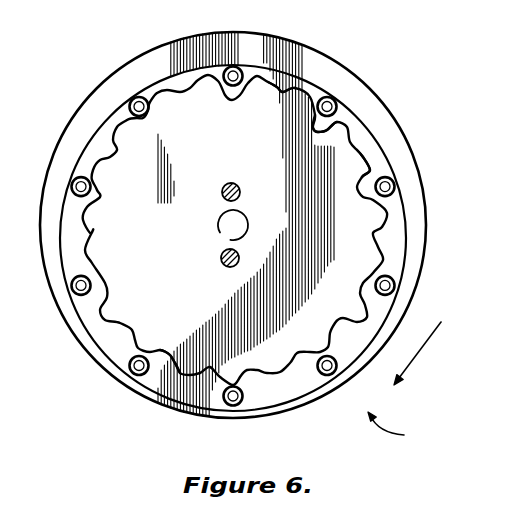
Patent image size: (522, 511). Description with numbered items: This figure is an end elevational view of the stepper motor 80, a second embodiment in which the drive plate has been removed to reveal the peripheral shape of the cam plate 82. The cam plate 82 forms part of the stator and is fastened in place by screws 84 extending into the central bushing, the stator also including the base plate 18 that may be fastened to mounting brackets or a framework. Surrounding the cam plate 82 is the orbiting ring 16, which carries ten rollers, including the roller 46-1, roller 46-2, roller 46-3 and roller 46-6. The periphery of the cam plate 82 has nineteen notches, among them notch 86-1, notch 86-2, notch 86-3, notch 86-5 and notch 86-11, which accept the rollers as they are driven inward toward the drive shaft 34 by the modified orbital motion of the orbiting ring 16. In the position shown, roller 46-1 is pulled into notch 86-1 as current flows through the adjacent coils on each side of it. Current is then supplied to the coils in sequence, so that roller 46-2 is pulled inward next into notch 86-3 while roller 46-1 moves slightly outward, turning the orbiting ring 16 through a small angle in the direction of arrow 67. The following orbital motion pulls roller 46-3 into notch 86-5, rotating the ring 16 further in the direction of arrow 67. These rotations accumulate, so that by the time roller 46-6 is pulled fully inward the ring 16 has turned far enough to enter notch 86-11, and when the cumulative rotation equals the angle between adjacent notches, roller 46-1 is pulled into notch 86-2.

The orbiting ring 16 is at (88, 138).
The base plate 18 is at (86, 95).
The drive shaft 34 is at (223, 237).
The roller 46-1 is at (238, 65).
The roller 46-2 is at (330, 98).
The roller 46-3 is at (395, 186).
The roller 46-6 is at (237, 405).
The arrow 67 is at (412, 364).
The stepper motor 80 is at (401, 429).
The cam plate 82 is at (171, 238).
The screw 84 is at (224, 186).
The notch 86-1 is at (197, 80).
The notch 86-2 is at (285, 84).
The notch 86-3 is at (336, 130).
The notch 86-5 is at (371, 160).
The notch 86-11 is at (158, 400).